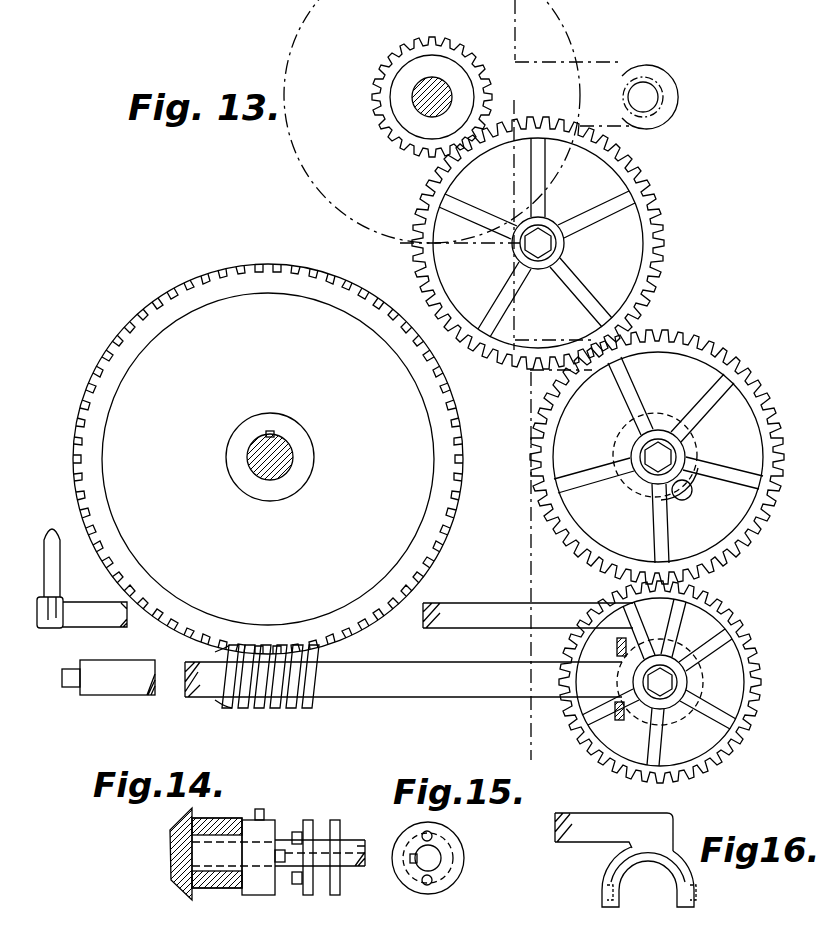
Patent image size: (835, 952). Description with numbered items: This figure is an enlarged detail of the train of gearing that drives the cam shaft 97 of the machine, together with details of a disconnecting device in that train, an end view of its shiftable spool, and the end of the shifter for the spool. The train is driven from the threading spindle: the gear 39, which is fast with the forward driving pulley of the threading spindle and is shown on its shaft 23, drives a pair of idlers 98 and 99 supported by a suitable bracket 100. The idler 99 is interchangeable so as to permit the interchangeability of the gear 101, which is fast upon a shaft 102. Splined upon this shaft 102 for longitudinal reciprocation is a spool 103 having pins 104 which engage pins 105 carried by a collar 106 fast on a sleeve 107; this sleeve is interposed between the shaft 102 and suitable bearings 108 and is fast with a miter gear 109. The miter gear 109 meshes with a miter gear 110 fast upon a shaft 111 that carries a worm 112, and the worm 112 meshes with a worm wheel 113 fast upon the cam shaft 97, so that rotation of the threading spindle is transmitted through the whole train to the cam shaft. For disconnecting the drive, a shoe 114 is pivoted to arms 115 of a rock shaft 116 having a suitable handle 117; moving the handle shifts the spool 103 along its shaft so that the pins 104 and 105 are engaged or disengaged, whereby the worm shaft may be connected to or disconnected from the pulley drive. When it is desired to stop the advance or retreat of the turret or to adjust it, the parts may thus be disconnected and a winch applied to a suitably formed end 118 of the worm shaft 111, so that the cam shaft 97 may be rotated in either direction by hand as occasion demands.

In FIG. 13, the shaft 23 is at (445, 100).
In FIG. 13, the gear 39 is at (376, 93).
In FIG. 13, the cam shaft 97 is at (280, 457).
In FIG. 13, the idler 98 is at (661, 245).
In FIG. 13, the idler 99 is at (703, 356).
In FIG. 13, the bracket 100 is at (579, 273).
In FIG. 13, the gear 101 is at (745, 646).
In FIG. 13, the shaft 102 is at (668, 684).
In FIG. 14, the shaft 102 is at (352, 848).
In FIG. 13, the spool 103 is at (698, 727).
In FIG. 14, the spool 103 is at (335, 827).
In FIG. 15, the spool 103 is at (443, 880).
In FIG. 14, the pins 104 is at (297, 885).
In FIG. 15, the pins 104 is at (433, 878).
In FIG. 14, the pins 105 is at (282, 848).
In FIG. 14, the collar 106 is at (262, 889).
In FIG. 14, the sleeve 107 is at (228, 858).
In FIG. 14, the bearings 108 is at (220, 824).
In FIG. 13, the miter gear 109 is at (672, 722).
In FIG. 14, the miter gear 109 is at (172, 860).
In FIG. 13, the miter gear 110 is at (640, 706).
In FIG. 13, the shaft 111 is at (440, 683).
In FIG. 13, the worm 112 is at (298, 690).
In FIG. 13, the worm wheel 113 is at (268, 459).
In FIG. 16, the shoe 114 is at (643, 868).
In FIG. 16, the arms 115 is at (690, 869).
In FIG. 13, the rock shaft 116 is at (457, 622).
In FIG. 16, the rock shaft 116 is at (614, 832).
In FIG. 13, the handle 117 is at (52, 588).
In FIG. 13, the end 118 is at (72, 682).